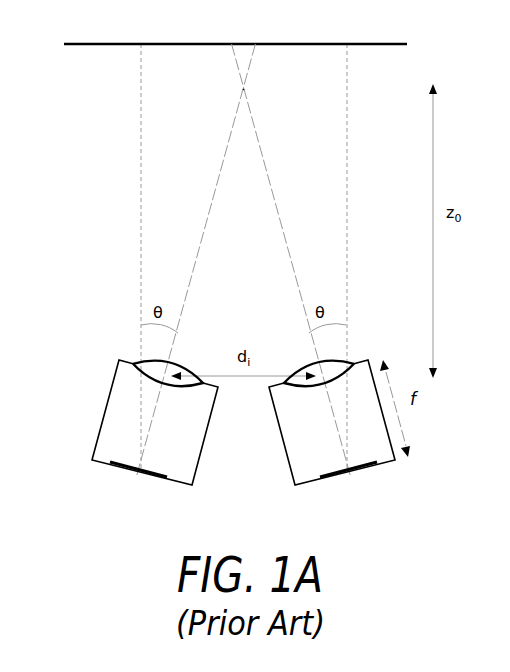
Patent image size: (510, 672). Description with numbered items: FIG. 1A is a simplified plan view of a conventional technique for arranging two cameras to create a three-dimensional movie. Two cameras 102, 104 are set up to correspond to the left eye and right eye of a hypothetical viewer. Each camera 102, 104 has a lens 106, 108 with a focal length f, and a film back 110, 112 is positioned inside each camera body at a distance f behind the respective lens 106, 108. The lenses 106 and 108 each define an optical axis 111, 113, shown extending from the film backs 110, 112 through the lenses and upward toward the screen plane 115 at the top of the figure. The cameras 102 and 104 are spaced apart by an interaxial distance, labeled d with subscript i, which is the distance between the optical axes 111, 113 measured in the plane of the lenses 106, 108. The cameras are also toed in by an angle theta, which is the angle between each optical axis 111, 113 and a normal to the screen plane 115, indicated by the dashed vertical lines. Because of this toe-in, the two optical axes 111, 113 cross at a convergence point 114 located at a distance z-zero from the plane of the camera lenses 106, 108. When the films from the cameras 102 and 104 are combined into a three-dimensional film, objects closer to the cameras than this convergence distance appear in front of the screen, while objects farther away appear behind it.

The camera 102 is at (150, 427).
The camera 104 is at (341, 429).
The lens 106 is at (180, 372).
The lens 108 is at (302, 370).
The film back 110 is at (145, 475).
The film back 112 is at (340, 472).
The optical axis 111 is at (216, 188).
The optical axis 113 is at (272, 190).
The convergence point 114 is at (244, 90).
The screen plane 115 is at (313, 44).